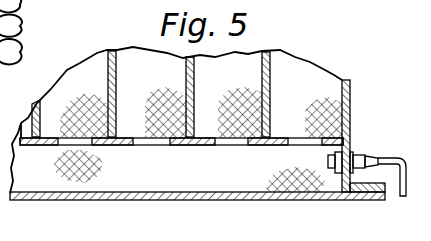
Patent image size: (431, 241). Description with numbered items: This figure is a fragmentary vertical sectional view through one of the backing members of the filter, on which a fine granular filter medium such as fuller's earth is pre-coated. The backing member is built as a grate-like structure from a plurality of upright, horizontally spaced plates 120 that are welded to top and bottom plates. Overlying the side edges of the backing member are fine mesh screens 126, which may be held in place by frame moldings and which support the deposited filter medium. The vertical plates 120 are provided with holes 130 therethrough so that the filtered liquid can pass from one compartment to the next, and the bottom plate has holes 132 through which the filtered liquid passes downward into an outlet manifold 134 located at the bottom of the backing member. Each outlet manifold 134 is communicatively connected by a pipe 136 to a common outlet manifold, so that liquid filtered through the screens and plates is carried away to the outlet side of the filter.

The upright plates 120 is at (114, 51).
The fine mesh screens 126 is at (327, 82).
The holes 130 is at (185, 72).
The holes 132 is at (165, 146).
The outlet manifold 134 is at (167, 183).
The pipes 136 is at (391, 157).